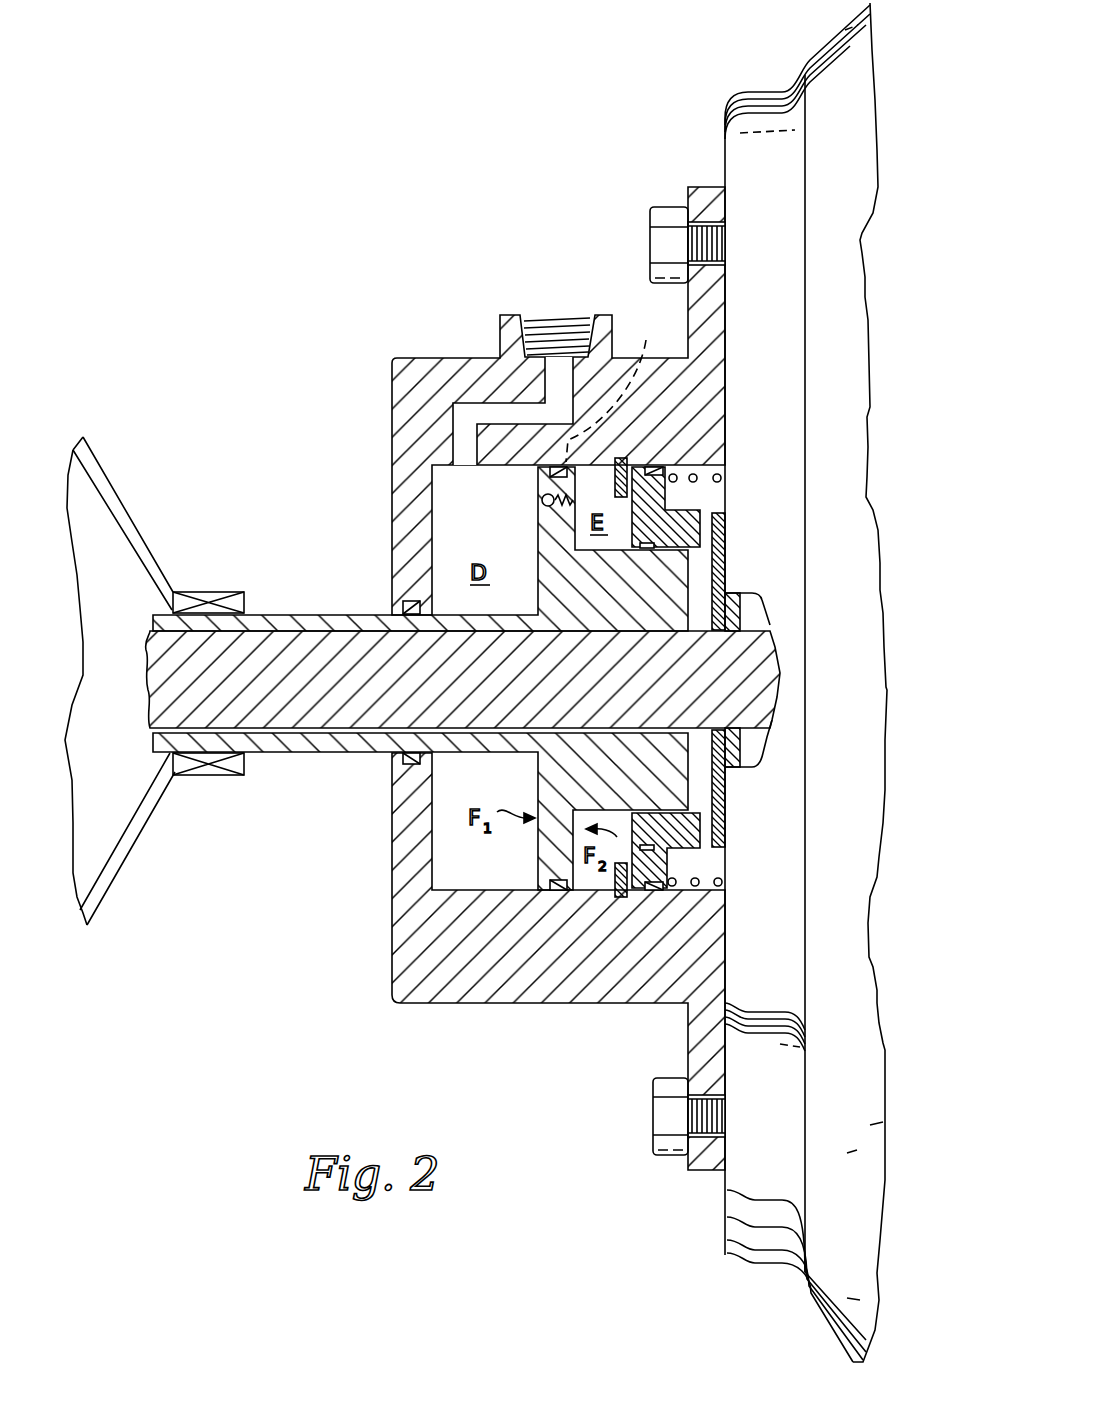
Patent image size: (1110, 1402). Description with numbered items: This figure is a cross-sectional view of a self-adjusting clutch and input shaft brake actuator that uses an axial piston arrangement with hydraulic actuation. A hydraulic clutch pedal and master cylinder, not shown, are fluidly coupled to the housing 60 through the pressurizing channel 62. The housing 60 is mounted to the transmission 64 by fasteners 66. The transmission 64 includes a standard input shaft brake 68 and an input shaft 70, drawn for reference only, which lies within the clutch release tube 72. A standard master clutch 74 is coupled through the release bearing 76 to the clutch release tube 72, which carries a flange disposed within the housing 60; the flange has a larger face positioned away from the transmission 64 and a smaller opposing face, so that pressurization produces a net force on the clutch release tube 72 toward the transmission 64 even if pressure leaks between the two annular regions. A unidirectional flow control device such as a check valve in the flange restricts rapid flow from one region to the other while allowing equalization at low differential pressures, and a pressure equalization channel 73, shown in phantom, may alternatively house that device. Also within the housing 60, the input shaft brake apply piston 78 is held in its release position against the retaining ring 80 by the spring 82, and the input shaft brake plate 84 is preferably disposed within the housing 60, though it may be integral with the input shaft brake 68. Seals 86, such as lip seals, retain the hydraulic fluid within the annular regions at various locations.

The housing 60 is at (392, 926).
The pressurizing channel 62 is at (445, 411).
The transmission 64 is at (754, 61).
The fasteners 66 is at (655, 207).
The input shaft brake 68 is at (757, 770).
The input shaft 70 is at (294, 672).
The clutch release tube 72 is at (356, 755).
The pressure equalization channel 73 is at (613, 387).
The master clutch 74 is at (148, 509).
The release bearing 76 is at (210, 592).
The input shaft brake apply piston 78 is at (668, 890).
The retaining ring 80 is at (620, 898).
The spring 82 is at (722, 478).
The input shaft brake plate 84 is at (726, 519).
The seals 86 is at (656, 470).